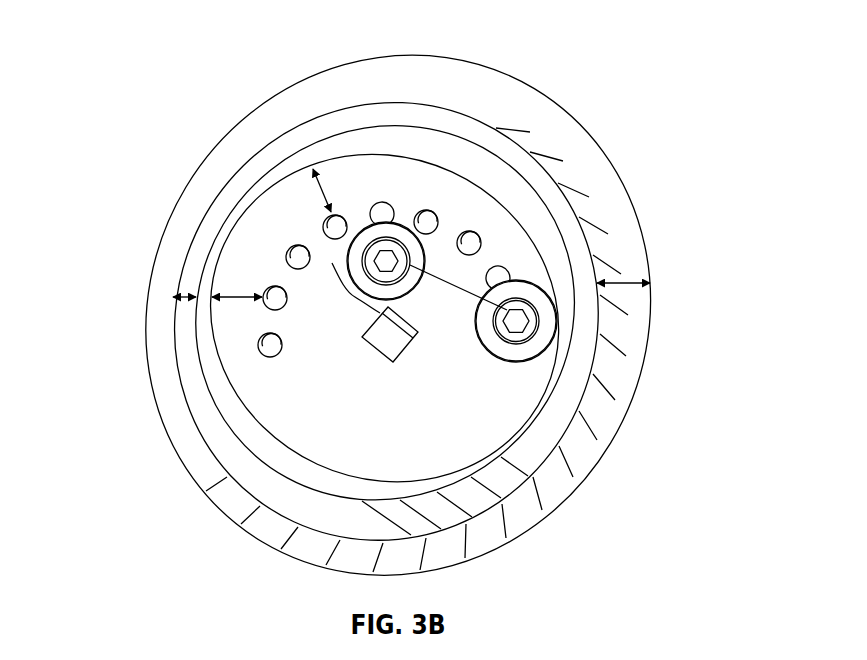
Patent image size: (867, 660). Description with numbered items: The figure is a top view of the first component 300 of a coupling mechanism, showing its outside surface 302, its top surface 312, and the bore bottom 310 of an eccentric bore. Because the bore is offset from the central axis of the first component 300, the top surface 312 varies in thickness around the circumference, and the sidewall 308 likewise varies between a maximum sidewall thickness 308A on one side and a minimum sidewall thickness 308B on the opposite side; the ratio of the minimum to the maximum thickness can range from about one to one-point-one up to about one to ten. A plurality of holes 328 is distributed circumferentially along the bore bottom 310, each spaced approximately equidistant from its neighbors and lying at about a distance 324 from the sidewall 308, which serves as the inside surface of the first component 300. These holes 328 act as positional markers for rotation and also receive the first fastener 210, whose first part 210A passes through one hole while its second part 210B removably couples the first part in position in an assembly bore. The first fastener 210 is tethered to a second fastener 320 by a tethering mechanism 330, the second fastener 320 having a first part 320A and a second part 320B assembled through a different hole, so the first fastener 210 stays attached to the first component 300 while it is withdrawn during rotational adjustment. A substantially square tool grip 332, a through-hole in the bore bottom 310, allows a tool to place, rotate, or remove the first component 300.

The first component 300 is at (118, 73).
The outside surface 302 is at (187, 451).
The sidewall 308 is at (313, 461).
The maximum sidewall thickness 308A is at (628, 283).
The minimum sidewall thickness 308B is at (174, 294).
The bore bottom 310 is at (428, 440).
The top surface 312 is at (460, 105).
The second fastener 320 is at (411, 188).
The first part of second fastener 320A is at (373, 222).
The second part of second fastener 320B is at (400, 240).
The distance 324 is at (322, 193).
The plurality of holes 328 is at (428, 211).
The tethering mechanism 330 is at (498, 268).
The tool grip 332 is at (384, 360).
The first fastener 210 is at (567, 367).
The first part of first fastener 210A is at (535, 323).
The second part of first fastener 210B is at (505, 356).